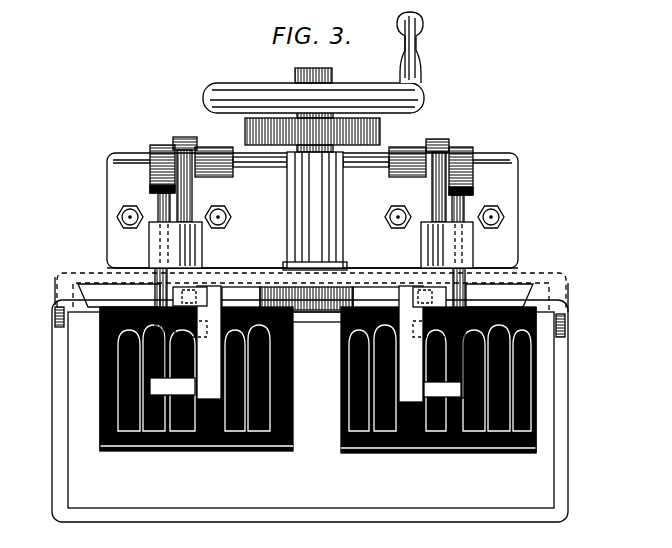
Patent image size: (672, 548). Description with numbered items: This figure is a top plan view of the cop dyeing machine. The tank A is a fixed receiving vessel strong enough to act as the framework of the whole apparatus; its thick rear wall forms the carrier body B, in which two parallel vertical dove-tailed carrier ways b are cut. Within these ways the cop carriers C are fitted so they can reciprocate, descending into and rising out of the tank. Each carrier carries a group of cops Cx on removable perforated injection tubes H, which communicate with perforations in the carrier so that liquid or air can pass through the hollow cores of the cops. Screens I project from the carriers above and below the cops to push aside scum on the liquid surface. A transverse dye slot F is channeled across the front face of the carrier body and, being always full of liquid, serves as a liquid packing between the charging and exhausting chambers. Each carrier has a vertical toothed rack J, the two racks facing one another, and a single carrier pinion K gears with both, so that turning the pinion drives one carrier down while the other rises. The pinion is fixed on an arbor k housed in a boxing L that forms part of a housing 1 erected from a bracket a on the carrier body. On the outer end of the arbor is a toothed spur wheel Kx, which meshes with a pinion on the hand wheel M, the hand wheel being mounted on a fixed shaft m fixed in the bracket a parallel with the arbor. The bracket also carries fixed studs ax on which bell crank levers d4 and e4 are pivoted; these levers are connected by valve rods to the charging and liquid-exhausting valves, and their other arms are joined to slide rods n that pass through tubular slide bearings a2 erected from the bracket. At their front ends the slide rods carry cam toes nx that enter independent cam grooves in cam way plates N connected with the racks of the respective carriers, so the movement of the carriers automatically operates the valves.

The tank A is at (310, 411).
The carrier body B is at (57, 282).
The cop carriers C is at (305, 296).
The carrier ways b is at (88, 306).
The toothed rack J is at (262, 297).
The arbor k is at (318, 322).
The screens I is at (125, 450).
The injection tubes H is at (160, 448).
The cops Cx is at (350, 368).
The cam way plates N is at (310, 344).
The cam toes nx is at (210, 281).
The housing 1 is at (500, 193).
The bracket a is at (107, 268).
The fixed studs ax is at (495, 157).
The slide rods n is at (160, 205).
The bell crank lever e4 is at (535, 157).
The bell crank lever d4 is at (188, 135).
The tubular slide bearings a2 is at (202, 250).
The carrier pinion K is at (343, 288).
The boxing L is at (303, 225).
The toothed spur wheel Kx is at (381, 130).
The hand wheel M is at (203, 97).
The fixed shaft m is at (300, 70).
The dye slot F is at (554, 261).